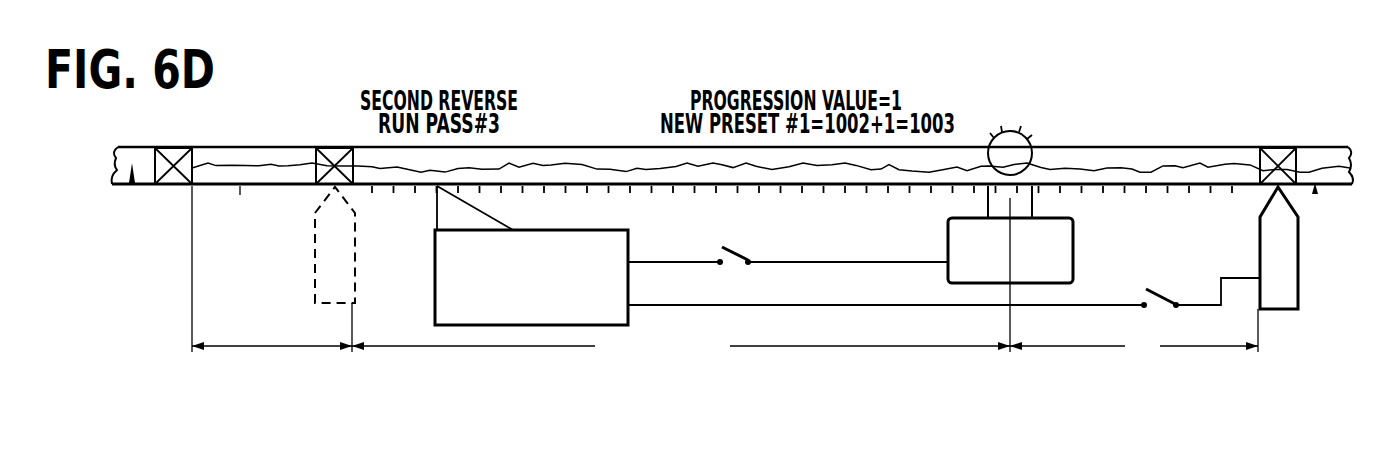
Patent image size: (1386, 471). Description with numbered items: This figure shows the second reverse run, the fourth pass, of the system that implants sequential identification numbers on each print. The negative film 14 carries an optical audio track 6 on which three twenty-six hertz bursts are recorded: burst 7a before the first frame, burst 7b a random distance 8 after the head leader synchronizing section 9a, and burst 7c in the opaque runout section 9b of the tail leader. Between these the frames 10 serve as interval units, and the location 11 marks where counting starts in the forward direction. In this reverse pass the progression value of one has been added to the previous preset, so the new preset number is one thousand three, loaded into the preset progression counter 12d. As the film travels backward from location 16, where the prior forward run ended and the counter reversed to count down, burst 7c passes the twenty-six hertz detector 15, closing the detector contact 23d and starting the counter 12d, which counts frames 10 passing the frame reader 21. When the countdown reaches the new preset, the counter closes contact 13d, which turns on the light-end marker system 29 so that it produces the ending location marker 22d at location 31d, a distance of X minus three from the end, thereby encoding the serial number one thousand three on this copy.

The optical audio track 6 is at (242, 186).
The 26 Hz burst before first frame 7a is at (168, 184).
The 26 Hz burst random distance after first frame 7b is at (319, 189).
The 26 Hz burst after last frame 7c is at (1300, 165).
The random distance of 7b from 9a 8 is at (257, 343).
The synchronizing section of head leader 9a is at (132, 185).
The opaque runout section of tail leader 9b is at (1315, 192).
The frames 10 is at (1193, 188).
The location of start of counting in forward direction 11 is at (353, 335).
The preset progression counter 12d is at (627, 242).
The contact closure when preset is reached 13d is at (740, 253).
The negative film 14 is at (833, 202).
The 26 Hz detector 15 is at (314, 253).
The location of start of reverse run countdown 16 is at (1260, 335).
The frame reader 21 is at (443, 212).
The location marker 22d is at (1028, 147).
The 26 Hz detector contact closure 23d is at (1150, 290).
The light-end marker system 29 is at (1065, 252).
The location of marker when preset number is reached 31d is at (1012, 328).